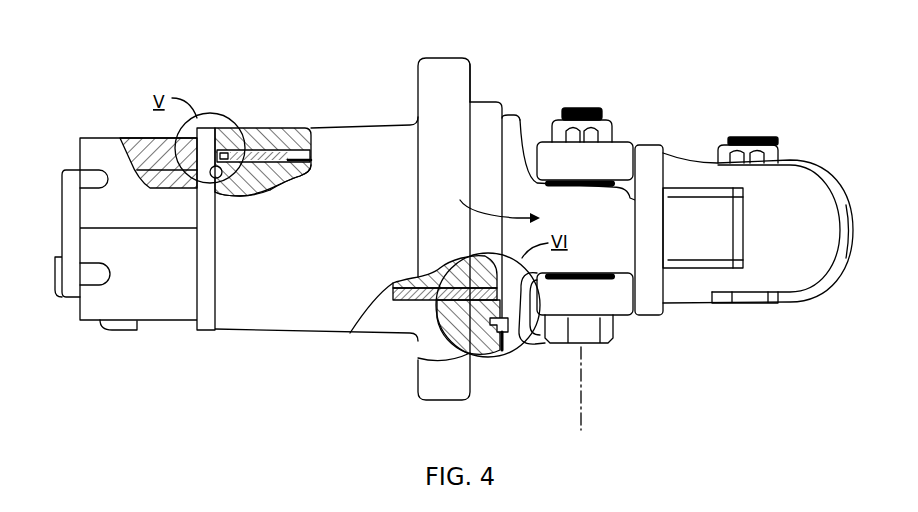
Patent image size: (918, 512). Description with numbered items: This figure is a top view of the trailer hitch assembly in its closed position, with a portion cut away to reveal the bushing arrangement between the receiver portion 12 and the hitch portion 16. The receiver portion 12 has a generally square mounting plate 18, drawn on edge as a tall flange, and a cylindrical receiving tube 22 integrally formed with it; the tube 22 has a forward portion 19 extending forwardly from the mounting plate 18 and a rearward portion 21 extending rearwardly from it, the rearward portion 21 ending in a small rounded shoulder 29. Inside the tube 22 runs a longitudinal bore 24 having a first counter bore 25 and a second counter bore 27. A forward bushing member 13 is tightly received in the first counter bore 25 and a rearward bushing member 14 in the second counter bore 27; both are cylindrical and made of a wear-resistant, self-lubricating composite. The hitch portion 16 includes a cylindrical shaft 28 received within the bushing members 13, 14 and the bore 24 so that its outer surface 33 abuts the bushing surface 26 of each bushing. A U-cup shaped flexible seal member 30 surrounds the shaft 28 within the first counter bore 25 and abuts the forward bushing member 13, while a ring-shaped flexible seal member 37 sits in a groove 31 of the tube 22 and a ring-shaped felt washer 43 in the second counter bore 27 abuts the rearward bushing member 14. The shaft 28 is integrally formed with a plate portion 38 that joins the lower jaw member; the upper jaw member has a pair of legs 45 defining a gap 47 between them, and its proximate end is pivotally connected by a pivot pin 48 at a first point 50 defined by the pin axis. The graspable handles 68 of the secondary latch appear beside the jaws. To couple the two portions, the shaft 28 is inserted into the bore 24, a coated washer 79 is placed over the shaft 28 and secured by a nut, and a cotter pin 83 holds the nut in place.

The receiver portion 12 is at (452, 54).
The forward bushing member 13 is at (265, 150).
The rearward bushing member 14 is at (430, 342).
The hitch portion 16 is at (790, 153).
The mounting plate 18 is at (471, 80).
The forward portion 19 is at (256, 126).
The rearward portion 21 is at (489, 102).
The receiving tube 22 is at (396, 124).
The bore 24 is at (302, 172).
The first counter bore 25 is at (258, 175).
The bushing surface 26 is at (433, 275).
The second counter bore 27 is at (400, 288).
The shaft 28 is at (293, 150).
The rounded shoulder 29 is at (506, 116).
The seal member 30 is at (226, 182).
The groove 31 is at (477, 355).
The outer surface 33 is at (313, 154).
The seal member 37 is at (506, 338).
The plate portion 38 is at (528, 135).
The felt washer 43 is at (470, 260).
The legs 45 is at (607, 160).
The gap 47 is at (490, 201).
The pivot pin 48 is at (578, 108).
The first point 50 is at (583, 365).
The graspable handles 68 is at (655, 158).
The washer 79 is at (205, 331).
The cotter pin 83 is at (120, 331).